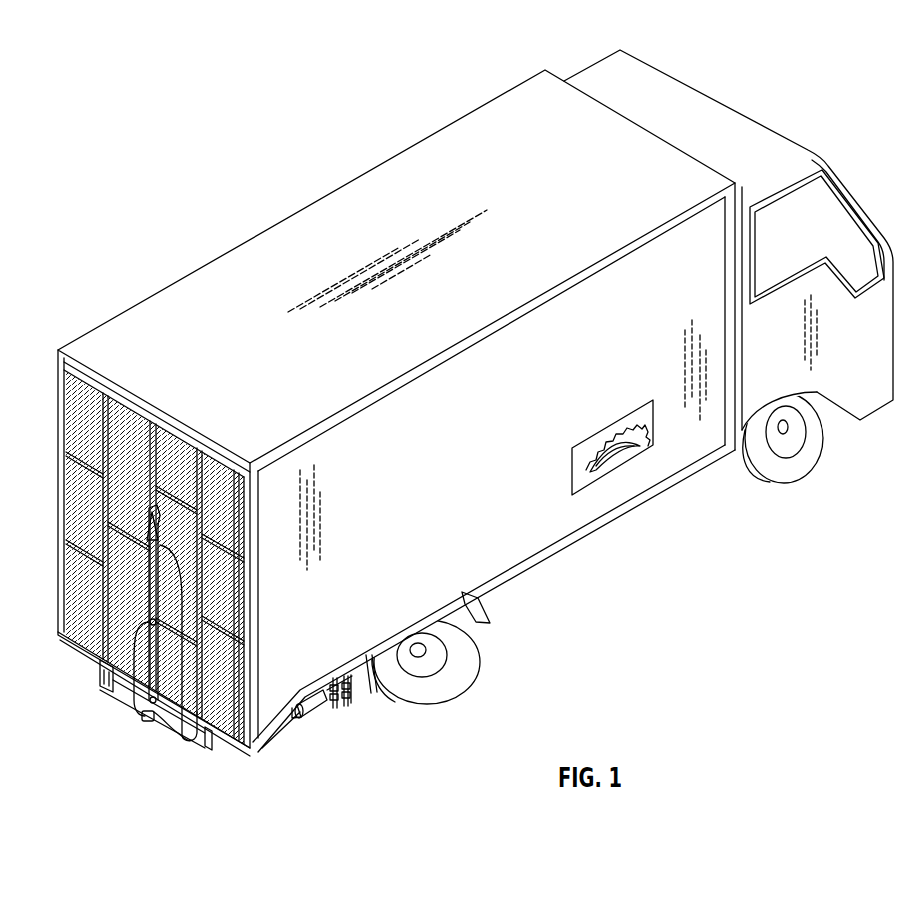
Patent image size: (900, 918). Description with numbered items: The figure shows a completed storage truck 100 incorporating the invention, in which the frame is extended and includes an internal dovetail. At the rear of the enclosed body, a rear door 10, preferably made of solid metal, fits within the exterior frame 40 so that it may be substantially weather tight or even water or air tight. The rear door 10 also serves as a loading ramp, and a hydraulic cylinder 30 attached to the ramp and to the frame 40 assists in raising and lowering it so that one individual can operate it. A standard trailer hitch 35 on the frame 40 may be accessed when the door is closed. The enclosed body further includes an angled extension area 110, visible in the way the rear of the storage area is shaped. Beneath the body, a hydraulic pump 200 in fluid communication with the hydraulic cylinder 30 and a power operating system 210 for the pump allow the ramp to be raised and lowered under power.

The storage truck 100 is at (316, 212).
The exterior frame 40 is at (123, 558).
The rear door 10 is at (78, 578).
The hydraulic cylinder 30 is at (143, 676).
The trailer hitch 35 is at (140, 720).
The angled extension area 110 is at (276, 722).
The hydraulic pump 200 is at (318, 708).
The power operating system 210 is at (353, 700).